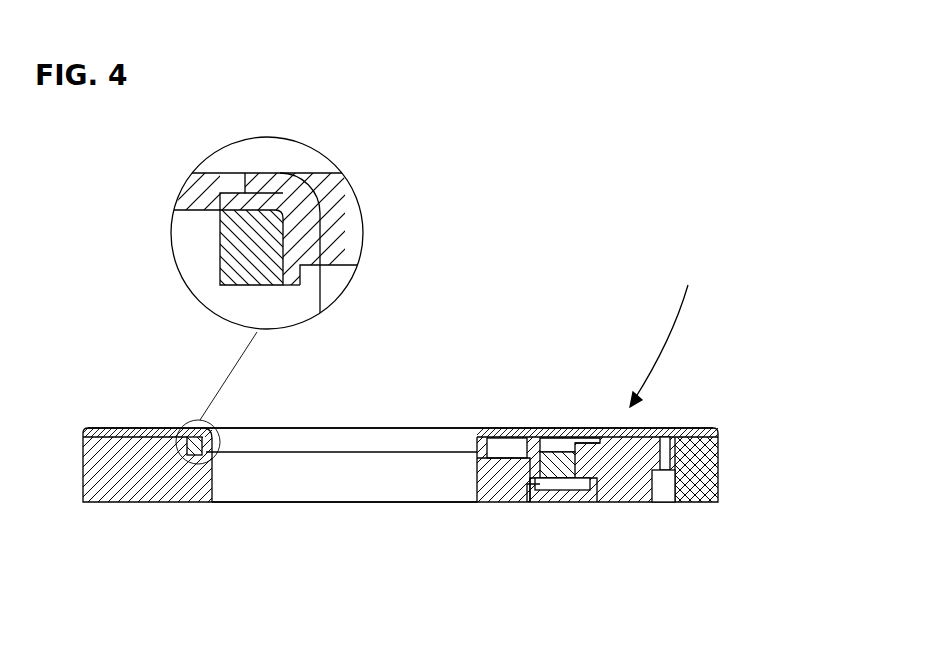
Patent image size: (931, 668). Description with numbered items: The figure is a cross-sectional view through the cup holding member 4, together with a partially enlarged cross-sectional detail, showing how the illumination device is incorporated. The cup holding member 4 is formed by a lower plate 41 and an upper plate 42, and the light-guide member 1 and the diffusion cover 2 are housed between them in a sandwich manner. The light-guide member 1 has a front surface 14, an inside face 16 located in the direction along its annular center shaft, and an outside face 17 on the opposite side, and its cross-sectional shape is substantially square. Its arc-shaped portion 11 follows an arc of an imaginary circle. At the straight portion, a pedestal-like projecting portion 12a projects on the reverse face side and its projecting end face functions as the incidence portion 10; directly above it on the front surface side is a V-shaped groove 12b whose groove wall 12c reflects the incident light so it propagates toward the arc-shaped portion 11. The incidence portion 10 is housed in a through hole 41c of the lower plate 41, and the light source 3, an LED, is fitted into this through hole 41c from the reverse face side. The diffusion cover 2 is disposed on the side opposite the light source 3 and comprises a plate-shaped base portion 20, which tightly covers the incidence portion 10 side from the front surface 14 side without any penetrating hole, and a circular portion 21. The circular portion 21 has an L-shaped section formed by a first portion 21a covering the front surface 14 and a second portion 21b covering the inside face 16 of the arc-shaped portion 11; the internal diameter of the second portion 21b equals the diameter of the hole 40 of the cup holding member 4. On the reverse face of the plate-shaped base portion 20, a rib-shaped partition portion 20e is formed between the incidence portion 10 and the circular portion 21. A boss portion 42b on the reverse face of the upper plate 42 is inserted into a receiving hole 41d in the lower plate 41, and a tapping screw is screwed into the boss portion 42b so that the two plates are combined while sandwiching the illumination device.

The light-guide member 1 is at (115, 502).
The diffusion cover 2 is at (335, 443).
The light source 3 is at (587, 500).
The cup holding member 4 is at (674, 334).
The incidence portion 10 is at (567, 500).
The arc-shaped portion 11 is at (198, 502).
The pedestal-like projecting portion 12a is at (590, 593).
The V-shaped groove 12b is at (560, 428).
The groove wall 12c is at (560, 428).
The front surface 14 is at (260, 198).
The inside face 16 is at (320, 248).
The outside face 17 is at (190, 256).
The plate-shaped base portion 20 is at (512, 428).
The partition portion 20e is at (503, 470).
The circular portion 21 is at (272, 440).
The first portion 21a is at (232, 195).
The second portion 21b is at (298, 218).
The hole 40 is at (406, 482).
The lower plate 41 is at (715, 507).
The through hole 41c is at (517, 498).
The receiving hole 41d is at (718, 467).
The upper plate 42 is at (693, 427).
The boss portion 42b is at (718, 485).